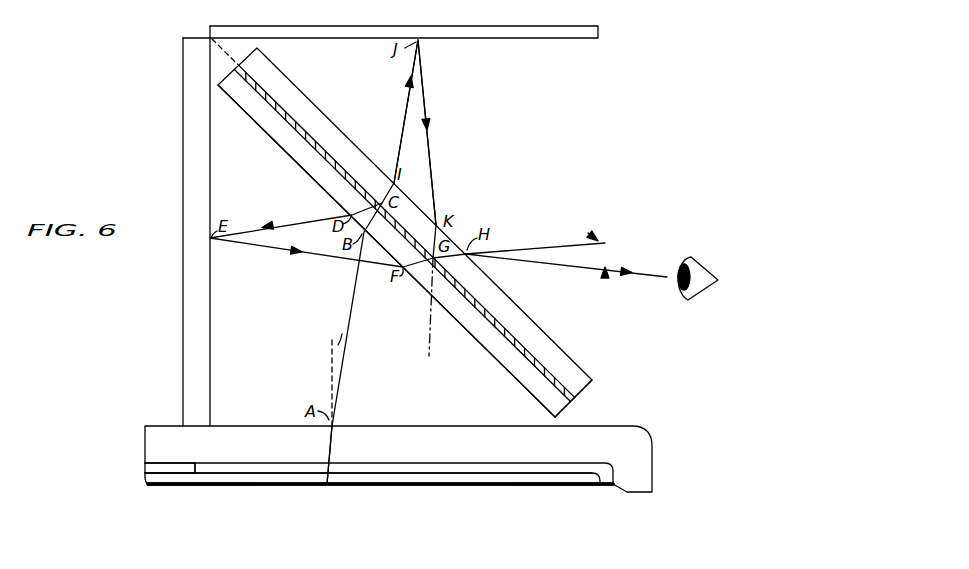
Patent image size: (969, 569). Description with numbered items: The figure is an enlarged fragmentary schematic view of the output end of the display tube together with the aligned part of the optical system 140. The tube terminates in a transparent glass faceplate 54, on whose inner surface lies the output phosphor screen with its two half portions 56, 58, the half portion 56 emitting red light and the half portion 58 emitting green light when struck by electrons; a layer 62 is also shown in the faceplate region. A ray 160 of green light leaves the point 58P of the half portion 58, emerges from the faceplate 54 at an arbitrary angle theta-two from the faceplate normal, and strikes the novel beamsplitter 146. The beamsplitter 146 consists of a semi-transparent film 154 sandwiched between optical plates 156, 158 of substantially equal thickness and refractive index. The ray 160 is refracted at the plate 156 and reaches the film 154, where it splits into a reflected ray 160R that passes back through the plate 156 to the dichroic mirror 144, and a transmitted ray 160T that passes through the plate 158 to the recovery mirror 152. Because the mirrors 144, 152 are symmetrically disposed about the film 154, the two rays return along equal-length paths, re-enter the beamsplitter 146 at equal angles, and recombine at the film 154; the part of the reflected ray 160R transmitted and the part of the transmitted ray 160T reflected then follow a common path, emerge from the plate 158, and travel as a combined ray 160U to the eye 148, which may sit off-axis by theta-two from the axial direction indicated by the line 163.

The optical system 140 is at (560, 131).
The dichroic mirror 144 is at (186, 140).
The beamsplitter 146 is at (342, 80).
The eye 148 is at (703, 272).
The recovery mirror 152 is at (543, 27).
The semi-transparent film 154 is at (509, 331).
The optical plate 156 is at (521, 374).
The optical plate 158 is at (578, 369).
The ray 160 is at (333, 447).
The transmitted ray 160T is at (391, 180).
The reflected ray 160R is at (345, 210).
The combined ray 160U is at (639, 277).
The axial direction line 163 is at (605, 243).
The faceplate 54 is at (447, 425).
The half portion 56 is at (168, 470).
The half portion 58 is at (508, 470).
The point 58P is at (327, 484).
The layer 62 is at (253, 482).